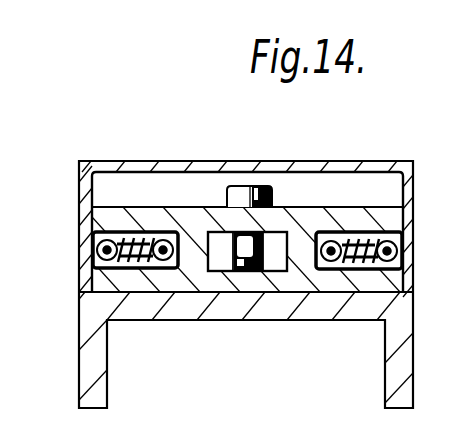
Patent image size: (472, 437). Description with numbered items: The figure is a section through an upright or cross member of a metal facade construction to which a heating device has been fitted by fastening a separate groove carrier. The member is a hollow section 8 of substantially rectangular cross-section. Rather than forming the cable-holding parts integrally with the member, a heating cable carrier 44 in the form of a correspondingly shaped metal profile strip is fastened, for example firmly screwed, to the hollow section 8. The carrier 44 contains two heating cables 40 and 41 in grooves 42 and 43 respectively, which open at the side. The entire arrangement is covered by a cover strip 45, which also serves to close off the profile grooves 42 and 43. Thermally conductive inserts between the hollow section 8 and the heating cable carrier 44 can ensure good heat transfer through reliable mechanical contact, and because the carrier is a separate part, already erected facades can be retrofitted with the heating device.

The hollow section 8 is at (85, 338).
The heating cable 40 is at (134, 236).
The heating cable 41 is at (372, 234).
The groove 42 is at (141, 236).
The groove 43 is at (368, 235).
The heating cable carrier 44 is at (296, 225).
The cover strip 45 is at (230, 166).